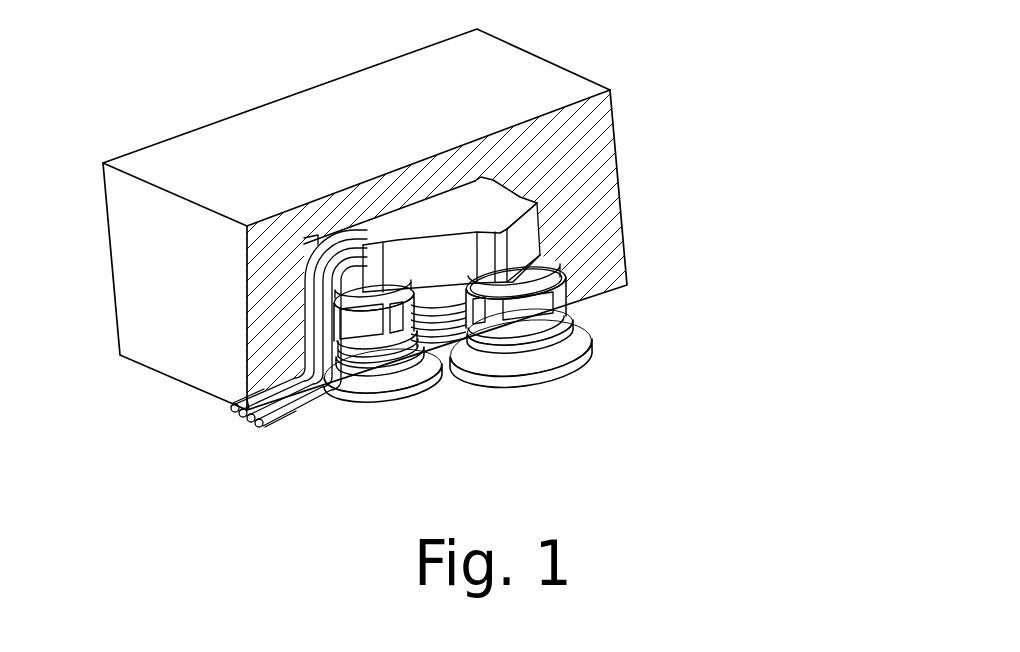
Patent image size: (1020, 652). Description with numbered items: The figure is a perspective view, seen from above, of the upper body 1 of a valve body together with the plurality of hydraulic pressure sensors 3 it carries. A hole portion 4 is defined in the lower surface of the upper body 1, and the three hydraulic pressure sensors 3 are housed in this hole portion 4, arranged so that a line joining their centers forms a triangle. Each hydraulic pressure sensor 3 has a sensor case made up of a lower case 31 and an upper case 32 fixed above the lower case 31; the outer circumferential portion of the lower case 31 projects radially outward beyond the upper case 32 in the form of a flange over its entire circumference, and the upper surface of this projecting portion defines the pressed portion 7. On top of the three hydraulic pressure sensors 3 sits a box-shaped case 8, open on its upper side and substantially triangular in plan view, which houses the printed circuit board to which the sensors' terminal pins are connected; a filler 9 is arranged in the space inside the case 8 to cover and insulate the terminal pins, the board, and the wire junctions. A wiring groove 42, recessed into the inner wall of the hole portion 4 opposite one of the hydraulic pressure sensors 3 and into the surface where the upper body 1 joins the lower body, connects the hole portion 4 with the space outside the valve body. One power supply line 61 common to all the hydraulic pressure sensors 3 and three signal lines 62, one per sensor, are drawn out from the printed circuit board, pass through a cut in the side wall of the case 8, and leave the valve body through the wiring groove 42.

The upper body 1 is at (157, 157).
The hydraulic pressure sensor 3 is at (358, 292).
The lower case 31 is at (377, 373).
The upper case 32 is at (350, 328).
The hole portion 4 is at (318, 232).
The pressed portion 7 is at (400, 387).
The case 8 is at (532, 247).
The filler 9 is at (425, 218).
The wiring groove 42 is at (246, 412).
The power supply line 61 is at (230, 416).
The signal line 62 is at (266, 430).